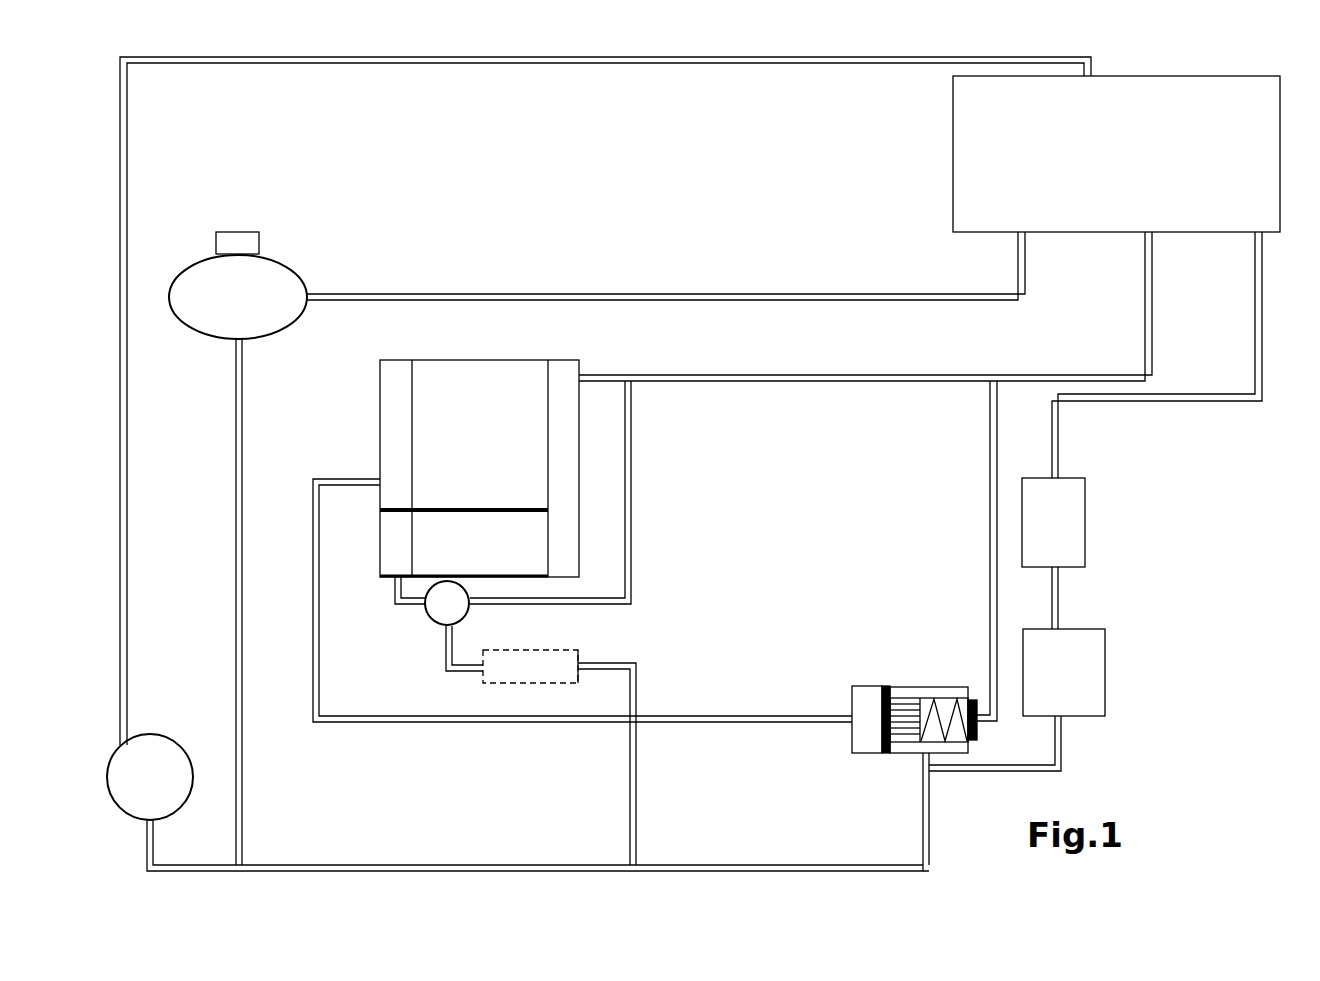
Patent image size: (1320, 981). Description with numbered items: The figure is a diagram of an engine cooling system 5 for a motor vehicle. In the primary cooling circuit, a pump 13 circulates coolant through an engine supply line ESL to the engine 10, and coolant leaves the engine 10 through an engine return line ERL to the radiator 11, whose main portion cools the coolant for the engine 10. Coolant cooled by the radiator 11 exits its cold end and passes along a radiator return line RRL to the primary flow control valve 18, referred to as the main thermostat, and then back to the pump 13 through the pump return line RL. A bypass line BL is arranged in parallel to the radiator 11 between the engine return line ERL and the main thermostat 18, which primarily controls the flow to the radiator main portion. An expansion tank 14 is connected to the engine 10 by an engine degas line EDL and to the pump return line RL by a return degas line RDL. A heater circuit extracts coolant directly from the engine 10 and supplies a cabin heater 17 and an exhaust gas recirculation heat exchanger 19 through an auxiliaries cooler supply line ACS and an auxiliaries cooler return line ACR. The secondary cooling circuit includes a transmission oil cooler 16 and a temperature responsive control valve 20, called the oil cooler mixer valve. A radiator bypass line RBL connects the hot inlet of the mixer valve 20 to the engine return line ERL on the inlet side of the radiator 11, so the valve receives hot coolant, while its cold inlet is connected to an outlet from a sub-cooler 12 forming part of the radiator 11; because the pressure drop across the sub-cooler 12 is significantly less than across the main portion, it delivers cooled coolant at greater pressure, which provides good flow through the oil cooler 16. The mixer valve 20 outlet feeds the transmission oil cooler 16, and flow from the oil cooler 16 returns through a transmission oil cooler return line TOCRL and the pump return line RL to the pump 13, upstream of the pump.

The engine cooling system 5 is at (1145, 576).
The engine 10 is at (1116, 154).
The radiator 11 is at (479, 468).
The sub-cooler 12 is at (464, 543).
The pump 13 is at (150, 777).
The expansion tank 14 is at (238, 285).
The transmission oil cooler 16 is at (584, 649).
The cabin heater 17 is at (1064, 672).
The primary flow control valve 18 is at (873, 672).
The exhaust gas recirculation heat exchanger 19 is at (1053, 522).
The temperature responsive control valve 20 is at (426, 619).
The engine supply line ESL is at (355, 75).
The engine degas line EDL is at (498, 290).
The engine return line ERL is at (660, 372).
The auxiliaries cooler supply line ACS is at (1190, 407).
The auxiliaries cooler return line ACR is at (1070, 757).
The bypass line BL is at (984, 483).
The radiator bypass line RBL is at (634, 470).
The return degas line RDL is at (233, 550).
The radiator return line RRL is at (389, 723).
The pump return line RL is at (700, 862).
The transmission oil cooler return line TOCRL is at (624, 790).